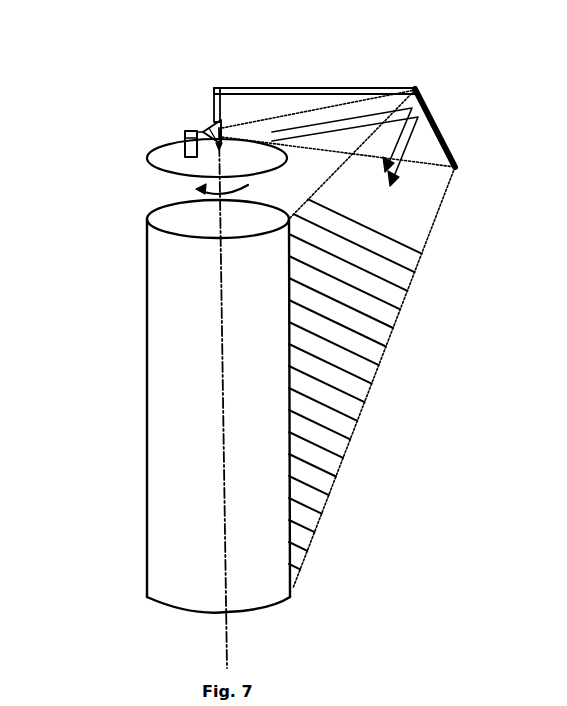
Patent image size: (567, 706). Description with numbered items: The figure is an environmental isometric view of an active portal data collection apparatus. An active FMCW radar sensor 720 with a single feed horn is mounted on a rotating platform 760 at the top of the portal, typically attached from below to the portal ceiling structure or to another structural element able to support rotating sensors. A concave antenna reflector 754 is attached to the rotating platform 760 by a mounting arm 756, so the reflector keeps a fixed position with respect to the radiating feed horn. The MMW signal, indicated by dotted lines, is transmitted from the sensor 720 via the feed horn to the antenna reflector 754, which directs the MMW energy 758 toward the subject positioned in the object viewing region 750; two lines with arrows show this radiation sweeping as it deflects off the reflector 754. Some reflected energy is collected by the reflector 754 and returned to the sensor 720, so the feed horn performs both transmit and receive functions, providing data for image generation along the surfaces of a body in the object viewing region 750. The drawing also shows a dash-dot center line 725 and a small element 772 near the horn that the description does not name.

The active FMCW radar sensor 720 is at (184, 131).
The axis of rotation 725 is at (232, 655).
The object viewing region 750 is at (218, 406).
The concave antenna reflector 754 is at (435, 120).
The mounting arm 756 is at (323, 85).
The MMW energy 758 is at (382, 200).
The rotating platform 760 is at (167, 157).
The horn antenna 772 is at (204, 131).